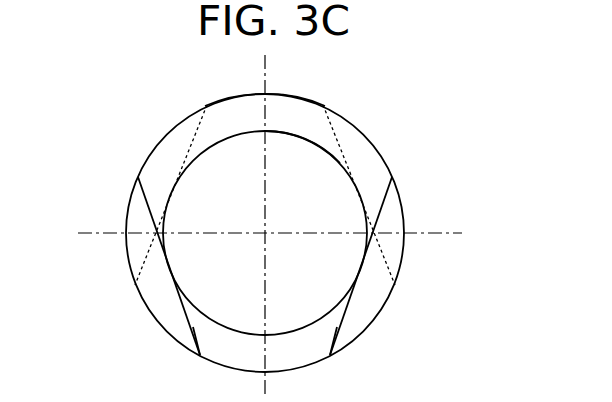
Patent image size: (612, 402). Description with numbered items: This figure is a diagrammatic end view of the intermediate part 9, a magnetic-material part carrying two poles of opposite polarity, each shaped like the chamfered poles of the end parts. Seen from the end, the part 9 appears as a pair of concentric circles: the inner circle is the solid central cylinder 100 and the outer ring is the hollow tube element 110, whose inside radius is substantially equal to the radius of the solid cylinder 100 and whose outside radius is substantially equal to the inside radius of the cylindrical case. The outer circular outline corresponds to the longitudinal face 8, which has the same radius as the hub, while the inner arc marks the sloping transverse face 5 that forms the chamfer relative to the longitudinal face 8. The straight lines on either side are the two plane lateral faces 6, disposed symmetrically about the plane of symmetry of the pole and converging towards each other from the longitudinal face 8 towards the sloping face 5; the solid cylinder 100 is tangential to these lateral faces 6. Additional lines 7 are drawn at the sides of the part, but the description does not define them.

The intermediate part 9 is at (110, 198).
The hollow tube element 110 is at (225, 118).
The solid central cylinder 100 is at (208, 182).
The longitudinal face 8 is at (308, 98).
The sloping transverse face 5 is at (317, 172).
The side wall lines 7 is at (155, 292).
The plane lateral faces 6 is at (193, 327).